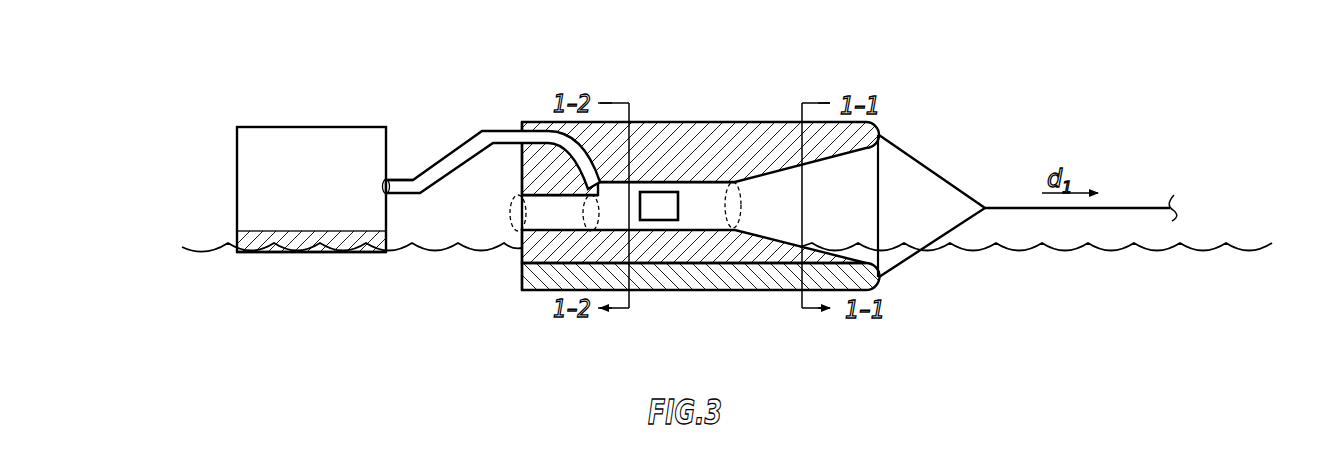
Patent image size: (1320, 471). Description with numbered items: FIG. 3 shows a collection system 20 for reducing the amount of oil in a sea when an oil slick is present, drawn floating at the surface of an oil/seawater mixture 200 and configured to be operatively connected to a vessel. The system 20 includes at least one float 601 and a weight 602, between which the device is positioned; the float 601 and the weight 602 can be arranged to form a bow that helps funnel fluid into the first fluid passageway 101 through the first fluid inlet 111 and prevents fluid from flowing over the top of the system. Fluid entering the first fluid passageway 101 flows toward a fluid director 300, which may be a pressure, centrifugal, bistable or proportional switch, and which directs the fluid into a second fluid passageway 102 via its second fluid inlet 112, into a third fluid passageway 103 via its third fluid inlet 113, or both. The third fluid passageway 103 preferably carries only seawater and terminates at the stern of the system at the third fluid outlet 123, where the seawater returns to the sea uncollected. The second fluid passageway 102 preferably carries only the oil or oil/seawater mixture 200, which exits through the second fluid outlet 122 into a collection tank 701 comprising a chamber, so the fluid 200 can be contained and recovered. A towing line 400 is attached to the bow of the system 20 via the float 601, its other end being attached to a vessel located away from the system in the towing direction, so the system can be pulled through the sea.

The collection system 20 is at (178, 90).
The collection tank 701 is at (303, 145).
The second fluid outlet 122 is at (384, 185).
The second fluid passageway 102 is at (507, 128).
The third fluid passageway 103 is at (542, 208).
The third fluid outlet 123 is at (515, 213).
The third fluid inlet 113 is at (585, 213).
The second fluid inlet 112 is at (615, 200).
The first fluid passageway 101 is at (702, 205).
The first fluid inlet 111 is at (737, 202).
The fluid director 300 is at (660, 221).
The weight 602 is at (763, 291).
The float 601 is at (268, 254).
The towing line 400 is at (928, 168).
The oil/seawater mixture 200 is at (178, 245).